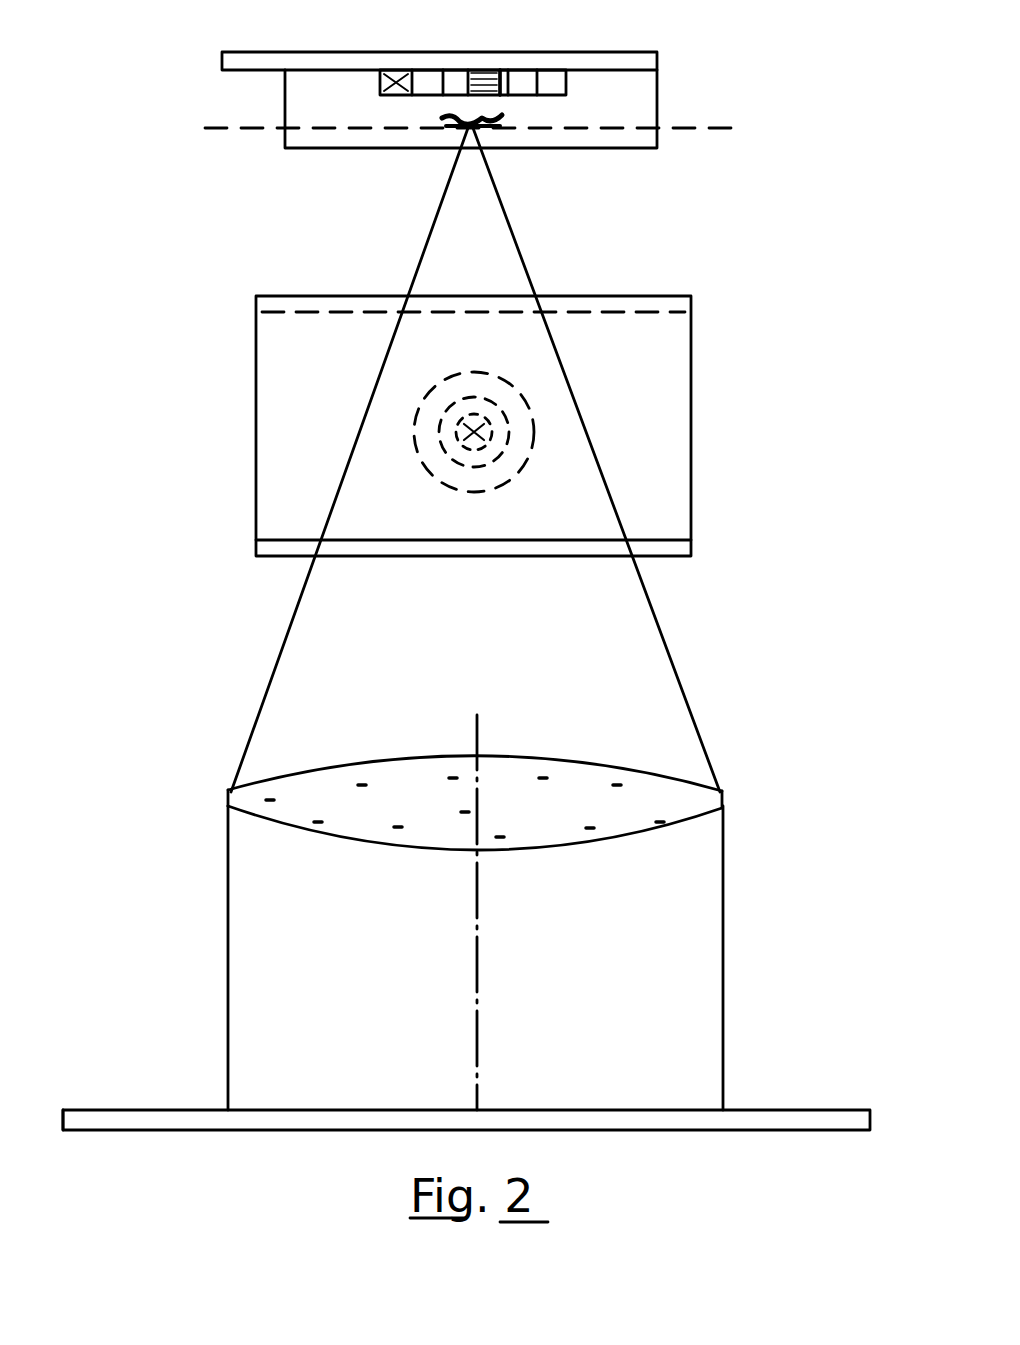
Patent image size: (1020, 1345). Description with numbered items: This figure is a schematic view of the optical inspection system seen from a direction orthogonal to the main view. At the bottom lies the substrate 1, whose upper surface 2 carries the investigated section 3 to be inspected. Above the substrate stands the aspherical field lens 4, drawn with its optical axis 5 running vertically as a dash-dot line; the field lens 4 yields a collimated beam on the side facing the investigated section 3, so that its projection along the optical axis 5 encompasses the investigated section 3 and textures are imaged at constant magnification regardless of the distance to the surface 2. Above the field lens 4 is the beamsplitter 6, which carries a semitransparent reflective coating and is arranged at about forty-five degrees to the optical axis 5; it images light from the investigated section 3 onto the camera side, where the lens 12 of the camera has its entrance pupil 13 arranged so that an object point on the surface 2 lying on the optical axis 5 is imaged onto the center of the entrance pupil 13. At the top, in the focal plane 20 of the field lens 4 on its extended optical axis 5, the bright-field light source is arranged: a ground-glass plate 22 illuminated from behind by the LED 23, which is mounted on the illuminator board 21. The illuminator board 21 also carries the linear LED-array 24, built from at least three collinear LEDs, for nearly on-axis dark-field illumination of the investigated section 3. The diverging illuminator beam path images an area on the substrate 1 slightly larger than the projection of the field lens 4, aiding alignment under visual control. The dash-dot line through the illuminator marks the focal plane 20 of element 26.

The substrate 1 is at (98, 1118).
The upper surface 2 is at (750, 1107).
The investigated section 3 is at (340, 1106).
The aspherical field lens 4 is at (708, 815).
The optical axis 5 is at (478, 963).
The beamsplitter 6 is at (675, 460).
The lens 12 is at (500, 437).
The entrance pupil 13 is at (497, 412).
The focal plane 20 is at (713, 130).
The illuminator board 21 is at (650, 63).
The ground-glass plate 22 is at (487, 130).
The LED 23 is at (478, 70).
The linear LED-array 24 is at (400, 75).
The housing 26 is at (308, 107).